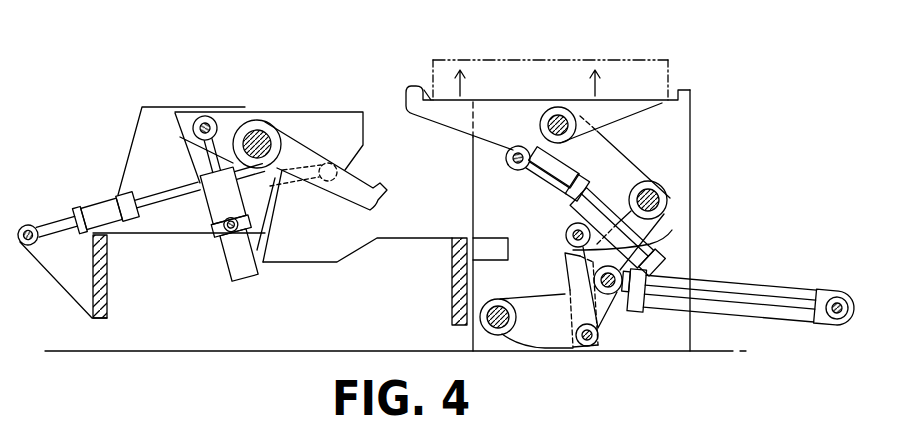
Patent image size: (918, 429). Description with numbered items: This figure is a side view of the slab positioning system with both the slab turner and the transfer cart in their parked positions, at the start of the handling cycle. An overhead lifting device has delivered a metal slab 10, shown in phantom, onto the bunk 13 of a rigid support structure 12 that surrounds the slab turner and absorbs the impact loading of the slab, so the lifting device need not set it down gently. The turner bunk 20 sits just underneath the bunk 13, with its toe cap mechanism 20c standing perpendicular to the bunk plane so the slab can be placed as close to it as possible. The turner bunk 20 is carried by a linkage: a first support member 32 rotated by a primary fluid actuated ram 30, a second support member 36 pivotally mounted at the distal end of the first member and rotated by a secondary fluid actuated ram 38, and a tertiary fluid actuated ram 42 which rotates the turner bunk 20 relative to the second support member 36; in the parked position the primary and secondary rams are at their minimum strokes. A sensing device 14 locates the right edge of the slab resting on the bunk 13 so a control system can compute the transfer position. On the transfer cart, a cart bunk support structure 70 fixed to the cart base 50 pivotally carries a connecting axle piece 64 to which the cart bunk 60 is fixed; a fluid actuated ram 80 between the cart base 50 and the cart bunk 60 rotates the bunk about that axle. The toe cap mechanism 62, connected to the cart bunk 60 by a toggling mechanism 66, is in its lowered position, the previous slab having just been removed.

The metal slab 10 is at (607, 58).
The rigid support structure 12 is at (670, 138).
The bunk 13 is at (675, 95).
The sensing device 14 is at (486, 246).
The turner bunk 20 is at (513, 100).
The toe cap mechanism 20c is at (432, 92).
The primary fluid actuated ram 30 is at (740, 290).
The first support member 32 is at (545, 334).
The second support member 36 is at (623, 167).
The secondary fluid actuated ram 38 is at (655, 242).
The tertiary fluid actuated ram 42 is at (566, 223).
The cart base 50 is at (110, 255).
The cart bunk 60 is at (328, 130).
The toe cap mechanism 62 is at (382, 201).
The connecting axle piece 64 is at (254, 132).
The toggling mechanism 66 is at (233, 258).
The cart bunk support structure 70 is at (152, 160).
The fluid actuated ram 80 is at (106, 217).